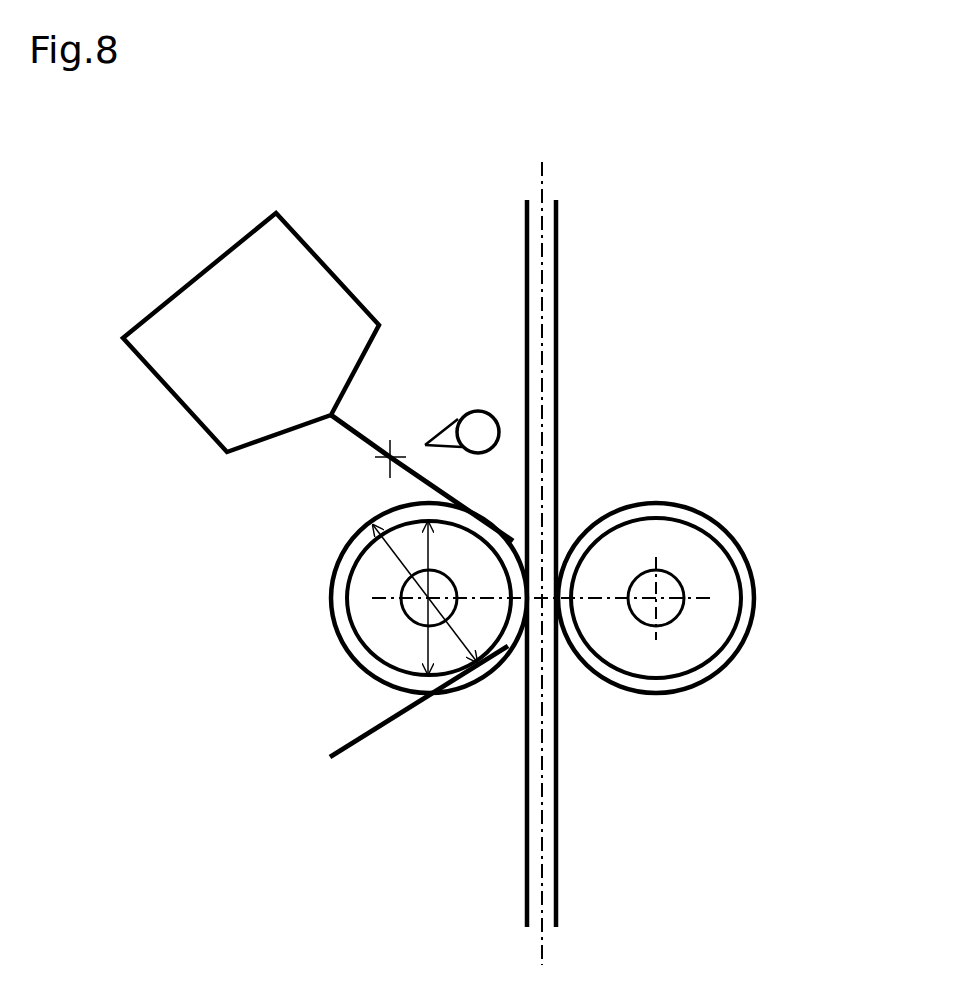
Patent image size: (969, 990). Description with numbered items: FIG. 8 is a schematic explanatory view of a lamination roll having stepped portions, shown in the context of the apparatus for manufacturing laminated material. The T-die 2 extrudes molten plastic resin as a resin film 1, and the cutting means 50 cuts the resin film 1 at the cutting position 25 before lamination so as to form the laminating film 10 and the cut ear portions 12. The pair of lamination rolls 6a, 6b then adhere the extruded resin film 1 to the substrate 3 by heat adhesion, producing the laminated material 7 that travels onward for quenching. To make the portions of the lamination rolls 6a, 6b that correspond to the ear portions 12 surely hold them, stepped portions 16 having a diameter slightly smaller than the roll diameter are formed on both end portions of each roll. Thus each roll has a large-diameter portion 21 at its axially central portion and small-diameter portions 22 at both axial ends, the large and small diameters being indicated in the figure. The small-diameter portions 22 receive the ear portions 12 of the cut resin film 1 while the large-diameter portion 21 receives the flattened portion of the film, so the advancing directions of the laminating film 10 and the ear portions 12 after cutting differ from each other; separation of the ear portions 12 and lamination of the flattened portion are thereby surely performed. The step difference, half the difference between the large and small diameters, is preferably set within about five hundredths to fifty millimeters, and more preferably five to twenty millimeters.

The resin film 1 is at (345, 432).
The T-die 2 is at (203, 373).
The substrate 3 is at (557, 397).
The lamination roll 6a is at (276, 578).
The lamination roll 6b is at (770, 604).
The laminated material 7 is at (548, 858).
The laminating film 10 is at (455, 500).
The ear portions 12 is at (337, 748).
The stepped portions 16 is at (360, 545).
The large-diameter portion 21 is at (455, 640).
The small-diameter portion 22 is at (423, 647).
The cutting position 25 is at (397, 428).
The cutting means 50 is at (484, 424).